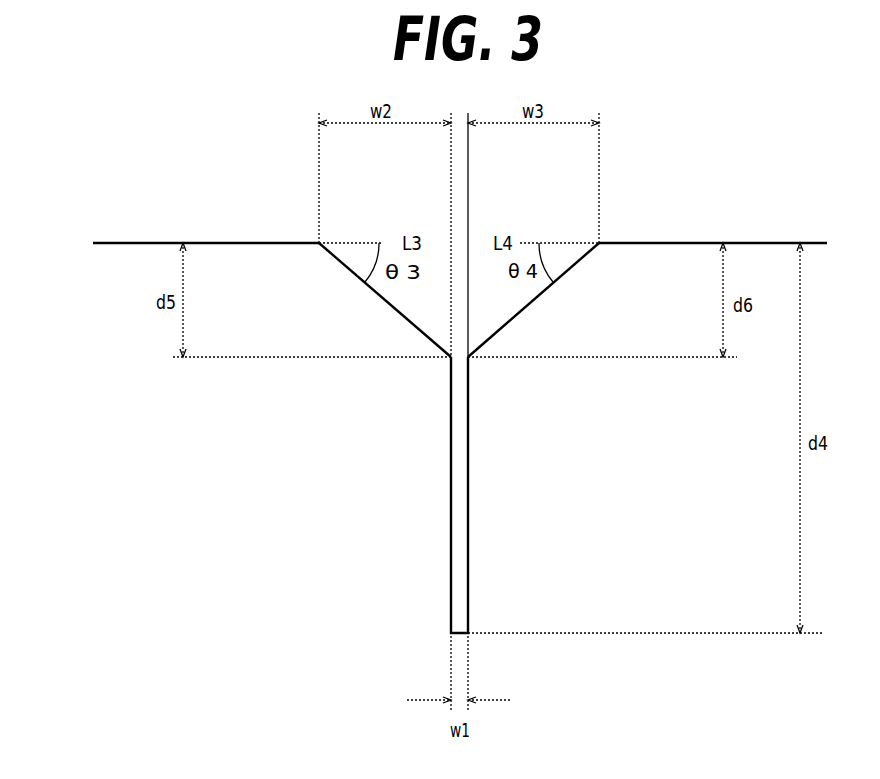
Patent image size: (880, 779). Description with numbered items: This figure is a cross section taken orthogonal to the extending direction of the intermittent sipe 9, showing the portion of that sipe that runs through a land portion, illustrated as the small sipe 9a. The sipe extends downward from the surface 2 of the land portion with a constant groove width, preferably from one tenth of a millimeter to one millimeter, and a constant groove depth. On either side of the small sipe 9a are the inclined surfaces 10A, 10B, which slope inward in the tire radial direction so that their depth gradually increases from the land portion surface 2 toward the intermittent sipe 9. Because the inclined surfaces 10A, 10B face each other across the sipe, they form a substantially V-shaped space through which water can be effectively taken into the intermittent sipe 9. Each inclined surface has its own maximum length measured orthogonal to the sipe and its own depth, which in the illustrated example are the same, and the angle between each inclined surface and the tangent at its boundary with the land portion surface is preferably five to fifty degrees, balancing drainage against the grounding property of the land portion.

The substrate surface 2 is at (224, 243).
The intermittent sipe 9 is at (498, 396).
The small sipe 9a is at (474, 222).
The inclined surface 10A is at (411, 323).
The inclined surface 10B is at (505, 323).